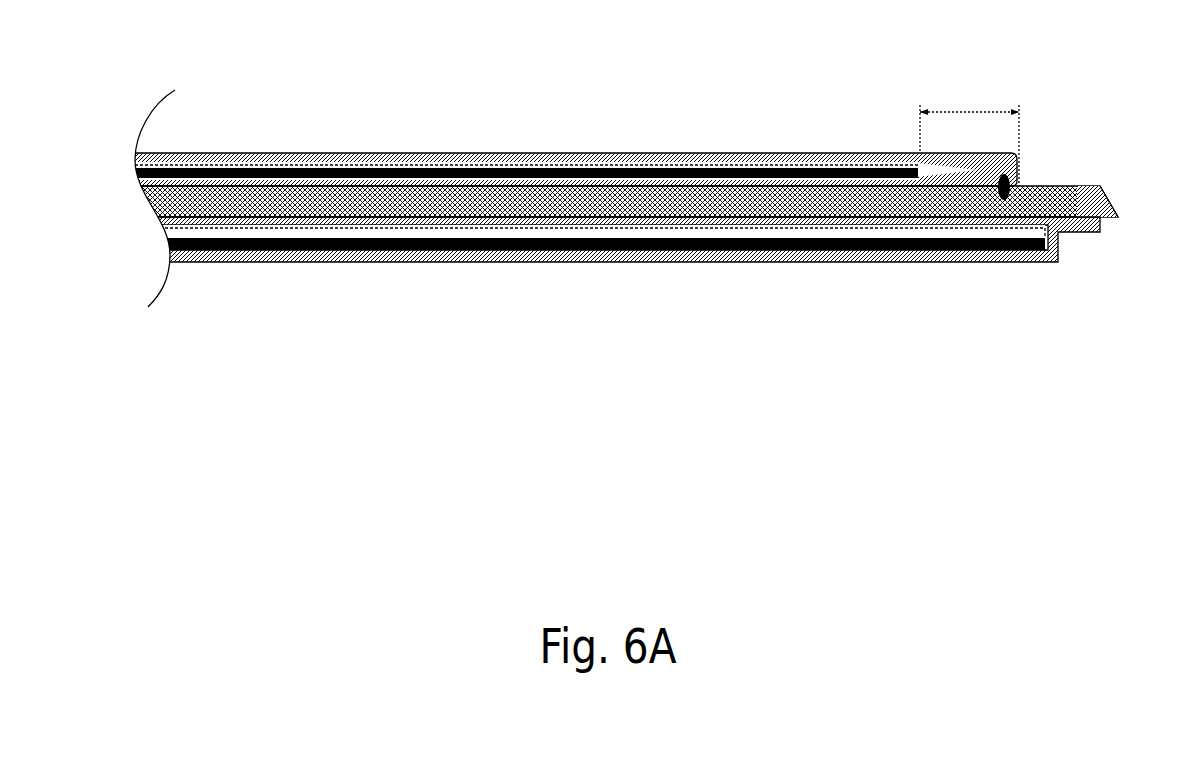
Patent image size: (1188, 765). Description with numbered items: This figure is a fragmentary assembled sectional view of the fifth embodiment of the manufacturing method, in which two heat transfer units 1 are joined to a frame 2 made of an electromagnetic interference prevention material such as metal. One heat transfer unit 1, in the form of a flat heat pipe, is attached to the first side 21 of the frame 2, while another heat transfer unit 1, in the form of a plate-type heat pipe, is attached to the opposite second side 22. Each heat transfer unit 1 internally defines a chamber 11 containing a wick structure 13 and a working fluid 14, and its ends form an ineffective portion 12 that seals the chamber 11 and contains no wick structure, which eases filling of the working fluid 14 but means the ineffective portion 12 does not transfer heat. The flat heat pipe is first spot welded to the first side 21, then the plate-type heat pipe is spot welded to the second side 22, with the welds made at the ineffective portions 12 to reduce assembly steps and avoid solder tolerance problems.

The heat transfer unit 1 is at (735, 153).
The chamber 11 is at (547, 168).
The ineffective portion 12 is at (975, 112).
The wick structure 13 is at (640, 163).
The working fluid 14 is at (342, 172).
The frame 2 is at (1142, 100).
The first side 21 is at (1055, 186).
The second side 22 is at (1118, 212).